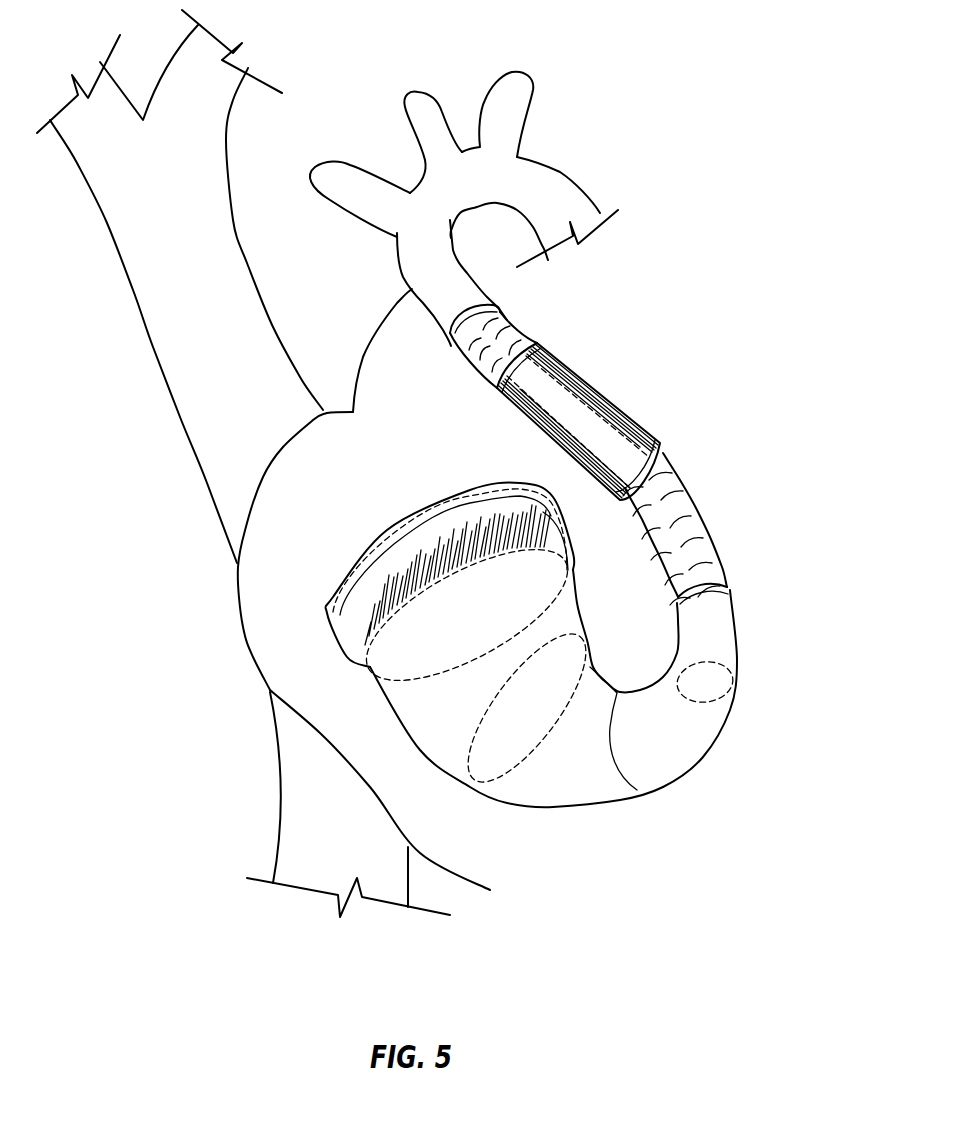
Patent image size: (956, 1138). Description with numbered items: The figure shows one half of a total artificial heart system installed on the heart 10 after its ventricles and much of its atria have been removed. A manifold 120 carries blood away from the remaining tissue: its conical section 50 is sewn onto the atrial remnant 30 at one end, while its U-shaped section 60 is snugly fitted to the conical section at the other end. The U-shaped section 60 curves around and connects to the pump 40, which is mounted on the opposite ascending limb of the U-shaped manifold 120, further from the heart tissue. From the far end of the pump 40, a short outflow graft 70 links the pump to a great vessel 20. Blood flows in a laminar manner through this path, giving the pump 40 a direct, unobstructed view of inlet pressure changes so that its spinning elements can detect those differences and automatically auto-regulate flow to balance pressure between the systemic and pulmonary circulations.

The heart 10 is at (748, 162).
The great vessel 20 is at (413, 267).
The atrial remnant 30 is at (297, 465).
The pump 40 is at (587, 397).
The conical section 50 is at (417, 705).
The U-shaped section 60 is at (713, 725).
The short outflow graft 70 is at (512, 333).
The manifold 120 is at (615, 827).